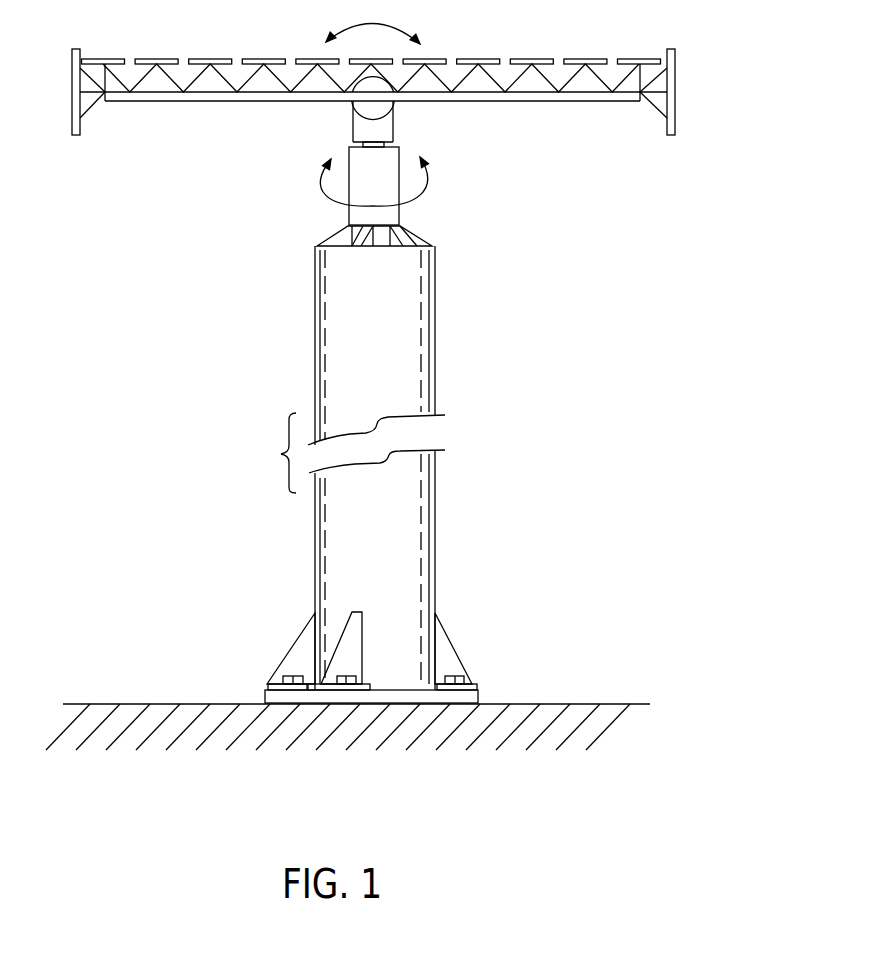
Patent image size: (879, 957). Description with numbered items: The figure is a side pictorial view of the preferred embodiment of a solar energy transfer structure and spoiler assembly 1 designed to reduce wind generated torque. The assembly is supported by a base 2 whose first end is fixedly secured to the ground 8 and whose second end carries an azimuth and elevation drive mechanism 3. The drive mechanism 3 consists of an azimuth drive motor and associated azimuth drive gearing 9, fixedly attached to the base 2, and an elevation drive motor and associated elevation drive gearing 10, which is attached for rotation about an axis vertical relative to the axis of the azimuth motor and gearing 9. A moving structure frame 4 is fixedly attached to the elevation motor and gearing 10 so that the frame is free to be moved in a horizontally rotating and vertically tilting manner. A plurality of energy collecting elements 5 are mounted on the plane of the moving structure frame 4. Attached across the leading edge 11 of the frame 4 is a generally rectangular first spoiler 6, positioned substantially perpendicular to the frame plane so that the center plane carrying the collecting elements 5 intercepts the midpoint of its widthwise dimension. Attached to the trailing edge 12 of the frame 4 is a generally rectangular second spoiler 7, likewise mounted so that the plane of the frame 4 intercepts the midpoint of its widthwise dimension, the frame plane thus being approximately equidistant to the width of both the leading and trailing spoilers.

The solar energy transfer structure and spoiler assembly 1 is at (231, 644).
The base 2 is at (440, 338).
The azimuth and elevation drive mechanism 3 is at (503, 127).
The moving structure frame 4 is at (185, 108).
The energy collecting elements 5 is at (238, 51).
The first spoiler 6 is at (684, 85).
The second spoiler 7 is at (69, 95).
The ground 8 is at (349, 806).
The azimuth drive motor and associated azimuth drive gearing 9 is at (356, 170).
The elevation drive motor and associated elevation drive gearing 10 is at (362, 125).
The leading edge 11 is at (647, 104).
The trailing edge 12 is at (107, 105).